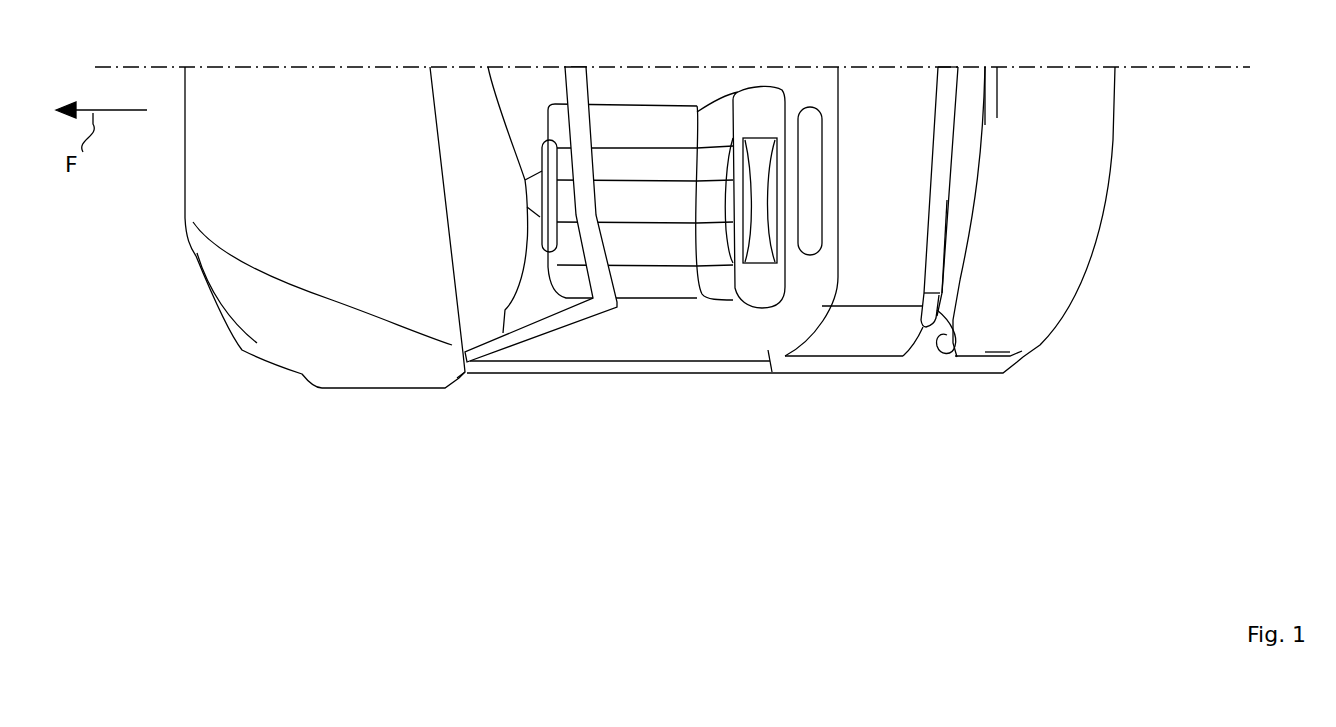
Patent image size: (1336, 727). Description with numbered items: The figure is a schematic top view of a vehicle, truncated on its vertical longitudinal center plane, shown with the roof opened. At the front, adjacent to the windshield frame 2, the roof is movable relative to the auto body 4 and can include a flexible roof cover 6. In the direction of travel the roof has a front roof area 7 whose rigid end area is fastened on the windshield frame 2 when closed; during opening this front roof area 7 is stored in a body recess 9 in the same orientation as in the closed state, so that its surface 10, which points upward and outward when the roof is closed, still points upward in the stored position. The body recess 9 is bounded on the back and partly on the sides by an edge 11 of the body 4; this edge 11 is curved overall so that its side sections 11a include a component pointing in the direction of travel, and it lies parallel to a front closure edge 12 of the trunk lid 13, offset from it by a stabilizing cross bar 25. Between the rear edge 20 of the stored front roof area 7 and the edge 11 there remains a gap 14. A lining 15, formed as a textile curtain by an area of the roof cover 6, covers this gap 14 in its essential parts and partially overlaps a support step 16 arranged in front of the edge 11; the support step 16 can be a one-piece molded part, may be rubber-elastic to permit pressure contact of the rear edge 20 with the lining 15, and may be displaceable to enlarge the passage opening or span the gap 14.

The windshield frame 2 is at (578, 73).
The auto body 4 is at (928, 357).
The roof cover 6 is at (847, 297).
The front roof area 7 is at (914, 88).
The body recess 9 is at (883, 342).
The surface 10 is at (886, 137).
The edge 11 is at (963, 107).
The side section 11a is at (837, 357).
The front closure edge 12 is at (985, 148).
The trunk lid 13 is at (1047, 216).
The gap 14 is at (948, 80).
The lining 15 is at (945, 242).
The support step 16 is at (957, 340).
The rear edge 20 is at (926, 212).
The stabilizing cross bar 25 is at (973, 126).